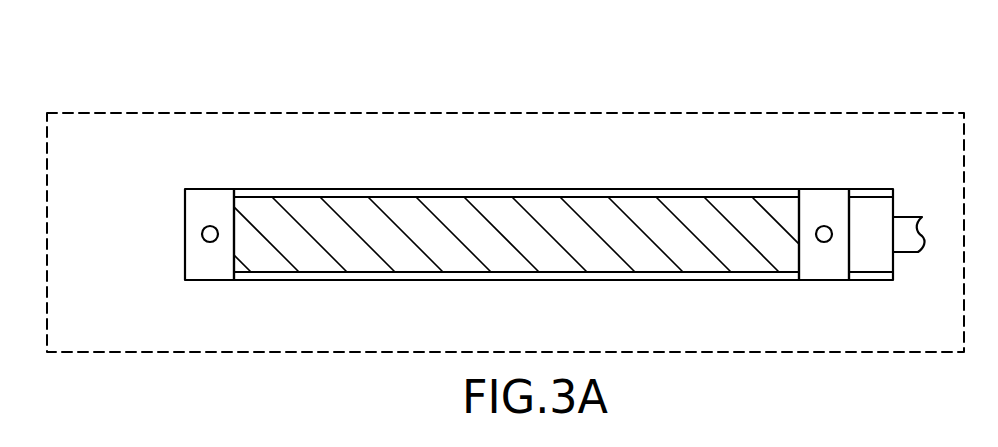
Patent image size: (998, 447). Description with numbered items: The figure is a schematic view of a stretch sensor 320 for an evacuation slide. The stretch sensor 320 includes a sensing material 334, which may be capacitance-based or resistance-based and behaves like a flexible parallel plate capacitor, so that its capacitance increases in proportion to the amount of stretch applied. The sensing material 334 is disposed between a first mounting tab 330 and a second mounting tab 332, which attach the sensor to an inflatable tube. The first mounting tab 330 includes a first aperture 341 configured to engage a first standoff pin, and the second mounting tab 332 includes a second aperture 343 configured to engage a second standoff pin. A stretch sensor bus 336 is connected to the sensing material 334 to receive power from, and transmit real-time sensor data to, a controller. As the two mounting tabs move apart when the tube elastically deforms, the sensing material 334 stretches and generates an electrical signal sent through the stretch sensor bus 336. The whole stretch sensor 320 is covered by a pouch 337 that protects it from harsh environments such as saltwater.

The stretch sensor 320 is at (160, 90).
The pouch 337 is at (624, 113).
The first mounting tab 330 is at (195, 265).
The first aperture 341 is at (201, 234).
The sensing material 334 is at (460, 208).
The second mounting tab 332 is at (822, 262).
The second aperture 343 is at (823, 226).
The stretch sensor bus 336 is at (877, 209).